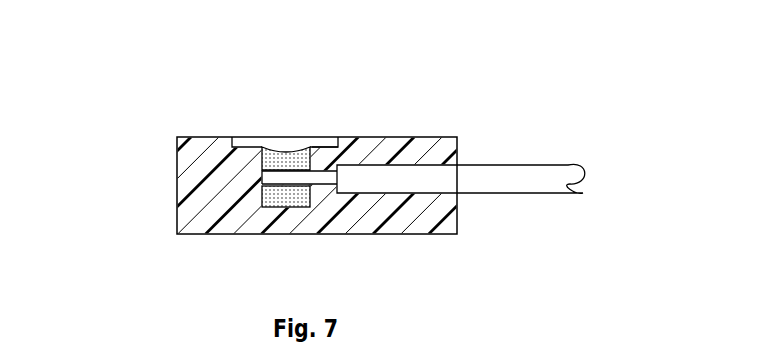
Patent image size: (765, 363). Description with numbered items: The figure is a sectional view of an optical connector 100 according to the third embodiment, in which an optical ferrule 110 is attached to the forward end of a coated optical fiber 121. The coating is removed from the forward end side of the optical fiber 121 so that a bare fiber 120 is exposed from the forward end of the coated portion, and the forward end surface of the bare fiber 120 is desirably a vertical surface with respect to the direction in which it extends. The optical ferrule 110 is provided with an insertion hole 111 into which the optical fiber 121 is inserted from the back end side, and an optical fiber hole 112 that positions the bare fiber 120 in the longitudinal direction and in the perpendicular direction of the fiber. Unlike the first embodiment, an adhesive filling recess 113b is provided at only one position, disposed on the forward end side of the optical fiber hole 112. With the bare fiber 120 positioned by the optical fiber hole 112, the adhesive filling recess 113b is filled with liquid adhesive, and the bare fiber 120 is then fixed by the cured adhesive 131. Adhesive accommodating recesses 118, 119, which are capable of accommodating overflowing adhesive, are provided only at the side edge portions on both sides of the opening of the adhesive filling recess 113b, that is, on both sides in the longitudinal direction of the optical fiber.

The optical connector 100 is at (489, 116).
The optical ferrule 110 is at (173, 131).
The insertion hole 111 is at (422, 190).
The optical fiber hole 112 is at (325, 172).
The adhesive filling recess 113b is at (285, 197).
The adhesive accommodating recess 118 is at (249, 137).
The adhesive accommodating recess 119 is at (322, 146).
The bare fiber 120 is at (320, 187).
The optical fiber 121 is at (500, 178).
The adhesive 131 is at (288, 160).